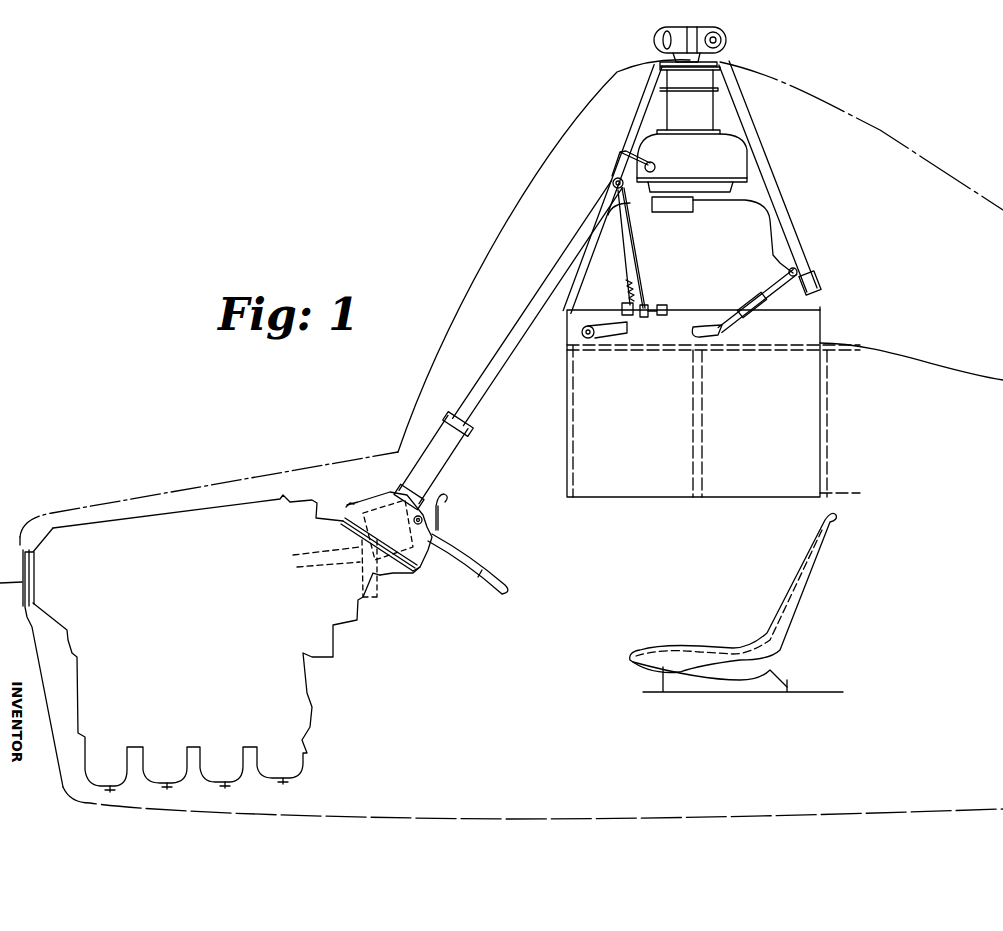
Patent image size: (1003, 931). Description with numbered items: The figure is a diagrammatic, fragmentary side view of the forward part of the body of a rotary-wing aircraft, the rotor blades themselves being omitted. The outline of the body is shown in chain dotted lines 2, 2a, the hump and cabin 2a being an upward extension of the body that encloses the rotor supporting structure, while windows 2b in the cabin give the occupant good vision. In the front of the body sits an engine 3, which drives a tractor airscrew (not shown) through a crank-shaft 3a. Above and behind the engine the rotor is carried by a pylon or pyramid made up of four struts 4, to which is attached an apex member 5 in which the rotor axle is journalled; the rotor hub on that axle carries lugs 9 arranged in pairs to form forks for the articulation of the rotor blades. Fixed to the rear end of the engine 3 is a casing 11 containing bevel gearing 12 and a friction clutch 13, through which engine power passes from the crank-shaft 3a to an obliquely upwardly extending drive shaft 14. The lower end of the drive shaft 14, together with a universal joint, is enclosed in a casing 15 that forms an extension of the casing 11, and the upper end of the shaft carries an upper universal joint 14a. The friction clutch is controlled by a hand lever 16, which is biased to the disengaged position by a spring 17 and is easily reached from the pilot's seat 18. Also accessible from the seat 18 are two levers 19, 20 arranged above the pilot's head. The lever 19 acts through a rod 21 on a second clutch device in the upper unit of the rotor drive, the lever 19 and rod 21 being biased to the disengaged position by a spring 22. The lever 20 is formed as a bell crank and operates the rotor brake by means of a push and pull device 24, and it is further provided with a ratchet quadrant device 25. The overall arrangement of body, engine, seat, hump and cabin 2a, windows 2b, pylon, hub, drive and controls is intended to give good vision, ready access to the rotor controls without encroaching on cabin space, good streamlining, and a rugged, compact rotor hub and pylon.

The aircraft body outline 2 is at (208, 484).
The hump and cabin 2a is at (527, 187).
The windows 2b is at (713, 402).
The engine 3 is at (201, 643).
The crank-shaft 3a is at (323, 567).
The struts 4 is at (587, 258).
The apex member 5 is at (683, 110).
The lugs 9 is at (665, 38).
The casing 11 is at (370, 498).
The bevel gearing 12 is at (373, 590).
The friction clutch 13 is at (423, 567).
The drive shaft 14 is at (487, 380).
The upper universal joint 14a is at (612, 182).
The casing 15 is at (437, 463).
The hand lever 16 is at (498, 577).
The spring 17 is at (443, 518).
The pilot's seat 18 is at (677, 645).
The lever 19 is at (615, 323).
The lever 20 is at (713, 333).
The rod 21 is at (640, 237).
The spring 22 is at (626, 285).
The push and pull device 24 is at (733, 200).
The ratchet quadrant device 25 is at (777, 310).